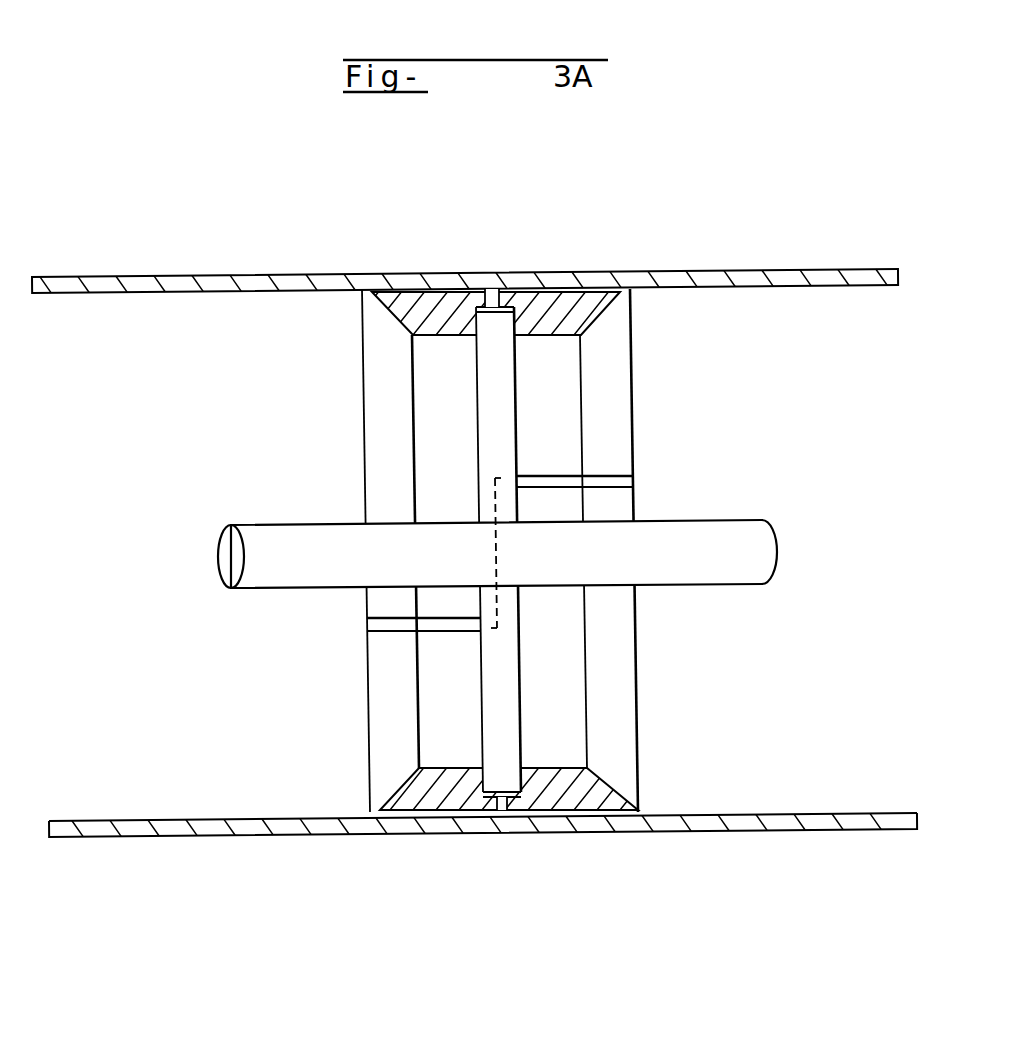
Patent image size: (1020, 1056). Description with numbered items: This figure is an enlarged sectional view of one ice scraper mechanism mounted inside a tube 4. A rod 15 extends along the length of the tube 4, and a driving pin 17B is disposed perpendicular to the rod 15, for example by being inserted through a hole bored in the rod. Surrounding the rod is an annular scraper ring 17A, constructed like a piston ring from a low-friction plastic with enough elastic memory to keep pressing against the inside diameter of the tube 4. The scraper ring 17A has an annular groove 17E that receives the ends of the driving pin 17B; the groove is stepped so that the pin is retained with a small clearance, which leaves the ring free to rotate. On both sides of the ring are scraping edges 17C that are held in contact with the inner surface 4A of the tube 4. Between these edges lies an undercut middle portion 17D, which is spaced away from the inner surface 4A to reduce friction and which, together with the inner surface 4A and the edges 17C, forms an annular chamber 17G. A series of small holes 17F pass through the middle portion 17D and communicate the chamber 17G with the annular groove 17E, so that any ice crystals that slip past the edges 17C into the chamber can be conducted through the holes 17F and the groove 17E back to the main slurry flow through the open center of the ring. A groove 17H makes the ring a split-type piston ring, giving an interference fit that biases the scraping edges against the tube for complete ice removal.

The tube 4 is at (318, 834).
The inner surface of the tube 4A is at (213, 820).
The rod 15 is at (700, 543).
The annular scraper ring 17A is at (590, 792).
The driving pin 17B is at (495, 408).
The scraping edges 17C is at (638, 822).
The undercut middle portion 17D is at (415, 291).
The annular groove 17E is at (505, 815).
The small holes 17F is at (490, 297).
The annular chamber 17G is at (577, 290).
The groove 17H is at (567, 483).